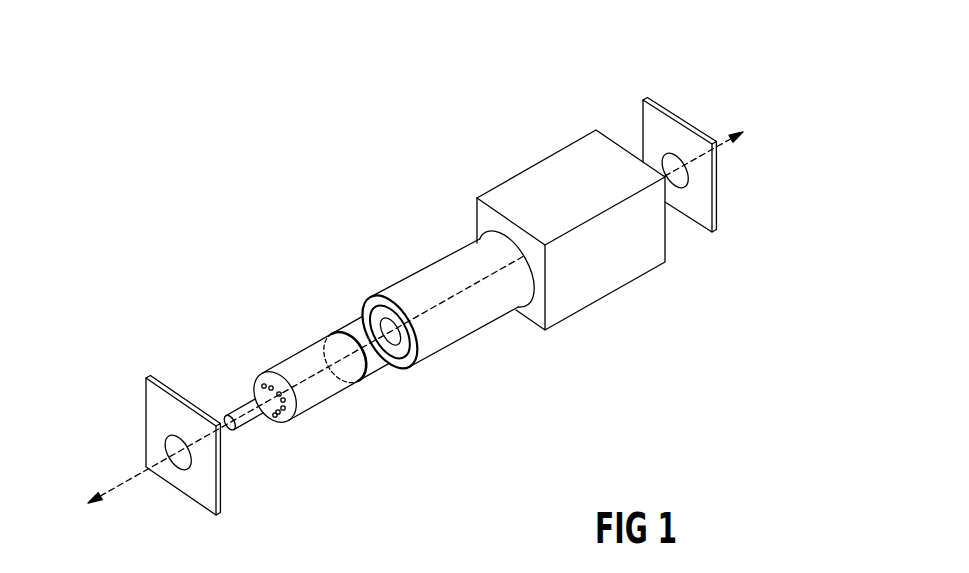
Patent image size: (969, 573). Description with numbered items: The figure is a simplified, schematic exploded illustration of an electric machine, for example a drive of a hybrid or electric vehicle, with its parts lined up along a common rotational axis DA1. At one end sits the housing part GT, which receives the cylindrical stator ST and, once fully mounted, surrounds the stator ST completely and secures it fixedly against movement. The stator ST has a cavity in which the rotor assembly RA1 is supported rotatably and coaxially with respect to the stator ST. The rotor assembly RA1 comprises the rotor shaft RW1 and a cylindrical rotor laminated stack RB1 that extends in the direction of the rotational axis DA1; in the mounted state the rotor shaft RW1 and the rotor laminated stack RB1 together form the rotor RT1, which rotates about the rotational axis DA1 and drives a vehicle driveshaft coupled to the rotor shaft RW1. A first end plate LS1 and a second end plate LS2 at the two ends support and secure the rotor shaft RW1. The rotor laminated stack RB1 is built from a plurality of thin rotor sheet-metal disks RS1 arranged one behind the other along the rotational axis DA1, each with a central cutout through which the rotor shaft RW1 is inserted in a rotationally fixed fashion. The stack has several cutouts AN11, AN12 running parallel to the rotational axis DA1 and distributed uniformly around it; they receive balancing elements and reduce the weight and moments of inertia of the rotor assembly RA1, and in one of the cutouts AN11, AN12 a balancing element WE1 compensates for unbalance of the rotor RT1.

The rotational axis DA1 is at (124, 483).
The first end plate LS1 is at (146, 398).
The second end plate LS2 is at (643, 120).
The rotor assembly RA1 is at (333, 217).
The rotor shaft RW1 is at (231, 411).
The rotor RT1 is at (272, 375).
The rotor laminated stack RB1 is at (306, 349).
The balancing element WE1 is at (300, 414).
The cutout AN11 is at (273, 413).
The cutout AN12 is at (346, 464).
The rotor sheet-metal disk RS1 is at (380, 372).
The stator ST is at (415, 273).
The housing part GT is at (523, 171).